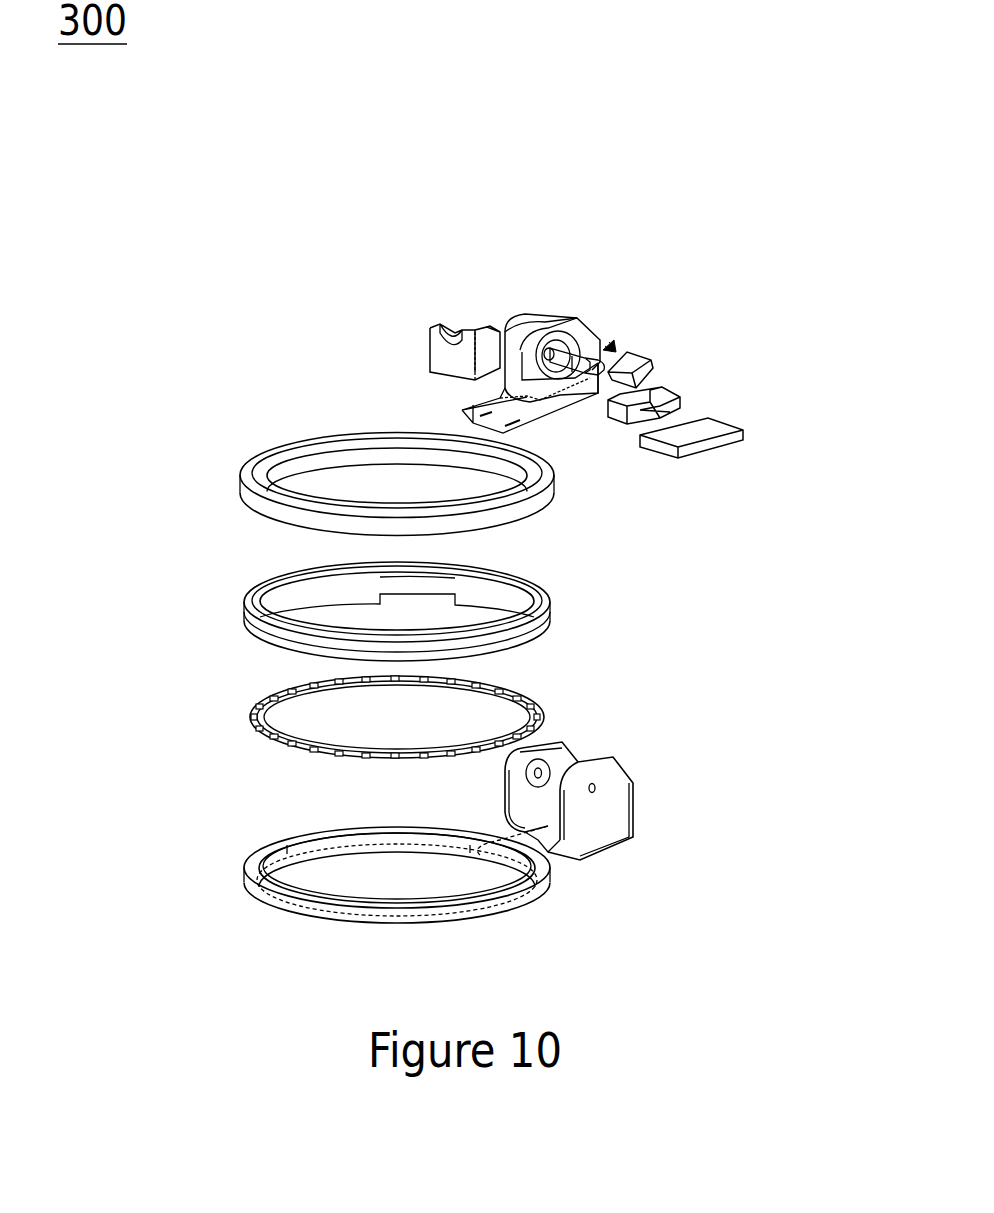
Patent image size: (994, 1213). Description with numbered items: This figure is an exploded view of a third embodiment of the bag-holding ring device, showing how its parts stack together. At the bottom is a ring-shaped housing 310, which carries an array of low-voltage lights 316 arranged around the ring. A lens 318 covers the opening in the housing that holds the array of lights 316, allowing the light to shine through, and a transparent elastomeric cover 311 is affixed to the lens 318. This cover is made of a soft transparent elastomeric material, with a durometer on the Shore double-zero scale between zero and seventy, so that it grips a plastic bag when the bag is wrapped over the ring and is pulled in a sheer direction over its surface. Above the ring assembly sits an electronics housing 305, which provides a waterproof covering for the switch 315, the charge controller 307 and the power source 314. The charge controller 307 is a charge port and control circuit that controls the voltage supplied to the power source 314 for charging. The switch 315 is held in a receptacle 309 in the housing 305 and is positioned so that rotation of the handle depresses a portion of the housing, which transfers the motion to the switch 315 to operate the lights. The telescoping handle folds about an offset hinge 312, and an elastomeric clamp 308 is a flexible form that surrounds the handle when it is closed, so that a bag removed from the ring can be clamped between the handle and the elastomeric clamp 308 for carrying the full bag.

The electronics housing 305 is at (548, 320).
The charge controller 307 is at (675, 395).
The elastomeric clamp 308 is at (430, 350).
The receptacle 309 is at (606, 345).
The ring-shaped housing 310 is at (312, 912).
The transparent elastomeric cover 311 is at (248, 502).
The offset hinge 312 is at (553, 343).
The power source 314 is at (706, 443).
The switch 315 is at (630, 358).
The array of low-voltage lights 316 is at (545, 713).
The lens 318 is at (247, 612).